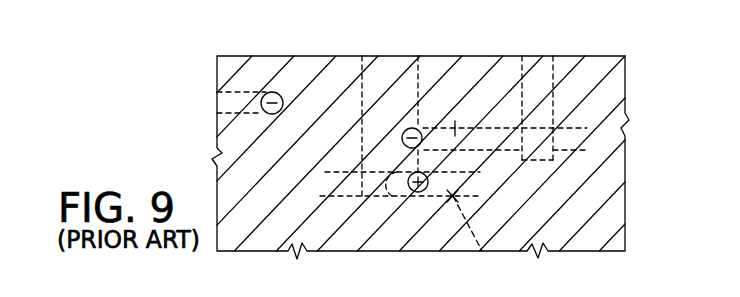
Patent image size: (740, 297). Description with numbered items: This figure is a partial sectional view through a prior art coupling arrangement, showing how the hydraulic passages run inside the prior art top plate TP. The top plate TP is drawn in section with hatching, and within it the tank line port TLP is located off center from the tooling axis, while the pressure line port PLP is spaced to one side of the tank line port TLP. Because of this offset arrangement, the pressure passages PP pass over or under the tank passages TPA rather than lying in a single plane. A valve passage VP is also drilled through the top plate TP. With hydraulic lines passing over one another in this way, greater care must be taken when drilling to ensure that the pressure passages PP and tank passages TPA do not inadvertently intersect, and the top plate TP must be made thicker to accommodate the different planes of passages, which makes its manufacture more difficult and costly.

The top plate TP is at (600, 66).
The valve passage VP is at (249, 92).
The pressure line port PLP is at (387, 66).
The tank passages TPA is at (455, 128).
The tank line port TLP is at (541, 60).
The pressure passages PP is at (484, 253).